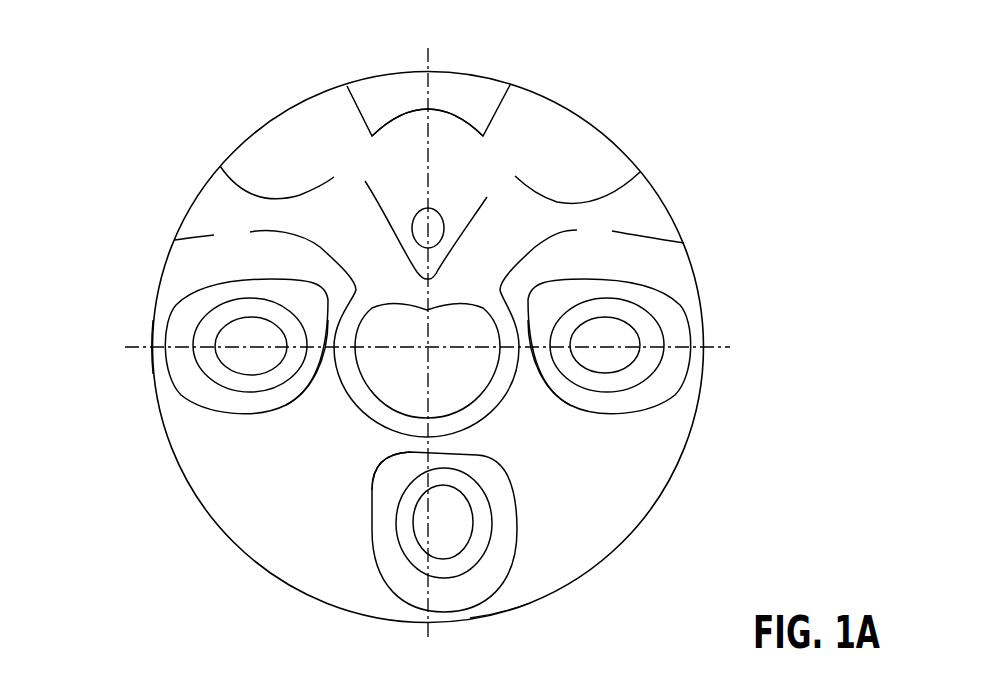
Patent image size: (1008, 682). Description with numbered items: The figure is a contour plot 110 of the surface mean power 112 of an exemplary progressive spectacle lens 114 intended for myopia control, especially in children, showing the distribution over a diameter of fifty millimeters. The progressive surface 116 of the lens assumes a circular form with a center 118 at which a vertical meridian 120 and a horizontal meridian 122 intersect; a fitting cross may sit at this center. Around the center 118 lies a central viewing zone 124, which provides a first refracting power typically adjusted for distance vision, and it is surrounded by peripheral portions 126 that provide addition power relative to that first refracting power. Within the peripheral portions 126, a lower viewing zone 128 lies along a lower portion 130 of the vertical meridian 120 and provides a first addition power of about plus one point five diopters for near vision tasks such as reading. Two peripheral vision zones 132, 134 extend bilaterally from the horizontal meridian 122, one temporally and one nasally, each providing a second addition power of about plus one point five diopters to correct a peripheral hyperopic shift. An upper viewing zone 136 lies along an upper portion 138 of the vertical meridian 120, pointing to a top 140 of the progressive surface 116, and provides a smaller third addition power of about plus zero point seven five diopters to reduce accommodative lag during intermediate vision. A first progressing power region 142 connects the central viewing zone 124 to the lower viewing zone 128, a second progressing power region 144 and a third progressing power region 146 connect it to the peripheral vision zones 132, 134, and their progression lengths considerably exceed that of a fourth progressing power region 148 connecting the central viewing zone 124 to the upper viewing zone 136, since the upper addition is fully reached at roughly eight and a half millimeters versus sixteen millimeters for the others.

The contour plot 110 is at (700, 120).
The surface mean power 112 is at (416, 321).
The progressive spectacle lens 114 is at (416, 321).
The progressive surface 116 is at (416, 321).
The center 118 is at (420, 350).
The vertical meridian 120 is at (428, 331).
The horizontal meridian 122 is at (140, 337).
The central viewing zone 124 is at (458, 379).
The peripheral portions 126 is at (432, 334).
The lower viewing zone 128 is at (465, 531).
The lower portion 130 is at (495, 623).
The peripheral vision zone 132 is at (231, 327).
The peripheral vision zone 134 is at (626, 336).
The upper viewing zone 136 is at (436, 212).
The upper portion 138 is at (421, 92).
The top 140 is at (457, 97).
The first progressing power region 142 is at (413, 450).
The second progressing power region 144 is at (327, 354).
The third progressing power region 146 is at (530, 355).
The fourth progressing power region 148 is at (439, 289).